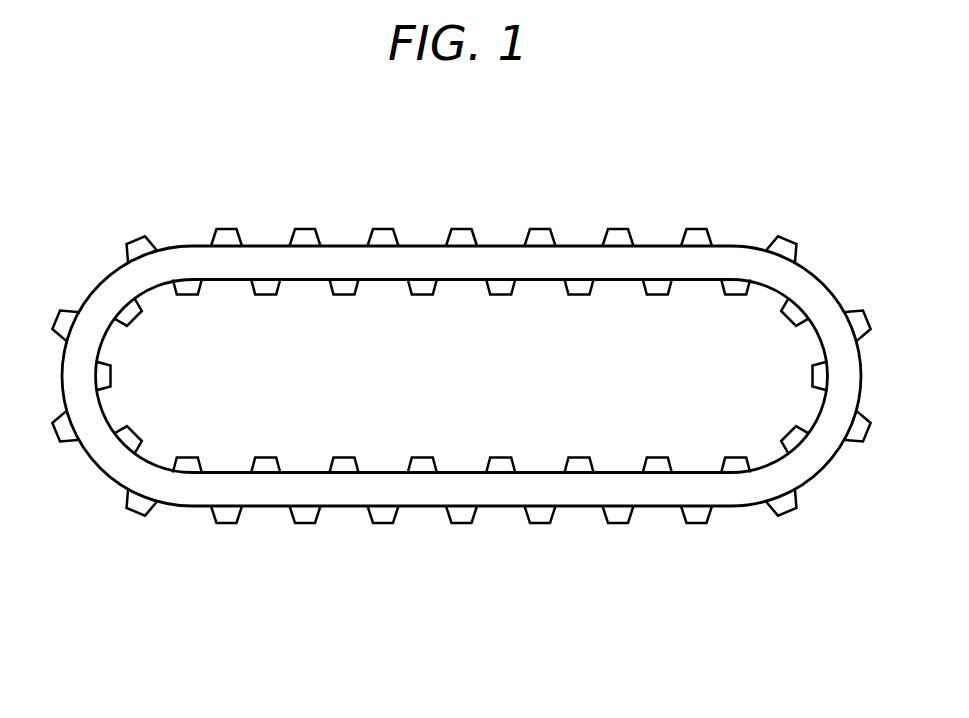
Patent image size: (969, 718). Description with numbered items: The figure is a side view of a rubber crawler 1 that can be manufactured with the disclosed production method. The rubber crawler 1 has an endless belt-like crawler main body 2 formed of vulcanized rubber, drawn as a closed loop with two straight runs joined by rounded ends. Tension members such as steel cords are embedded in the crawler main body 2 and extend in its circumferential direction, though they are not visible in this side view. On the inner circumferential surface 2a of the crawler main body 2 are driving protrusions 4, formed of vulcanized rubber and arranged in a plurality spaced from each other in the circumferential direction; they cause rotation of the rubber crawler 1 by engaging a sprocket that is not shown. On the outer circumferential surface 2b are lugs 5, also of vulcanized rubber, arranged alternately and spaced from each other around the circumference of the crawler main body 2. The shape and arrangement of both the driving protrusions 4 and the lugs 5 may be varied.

The rubber crawler 1 is at (631, 181).
The crawler main body 2 is at (421, 244).
The inner circumferential surface 2a is at (380, 472).
The outer circumferential surface 2b is at (343, 507).
The driving protrusions 4 is at (501, 462).
The lugs 5 is at (541, 516).